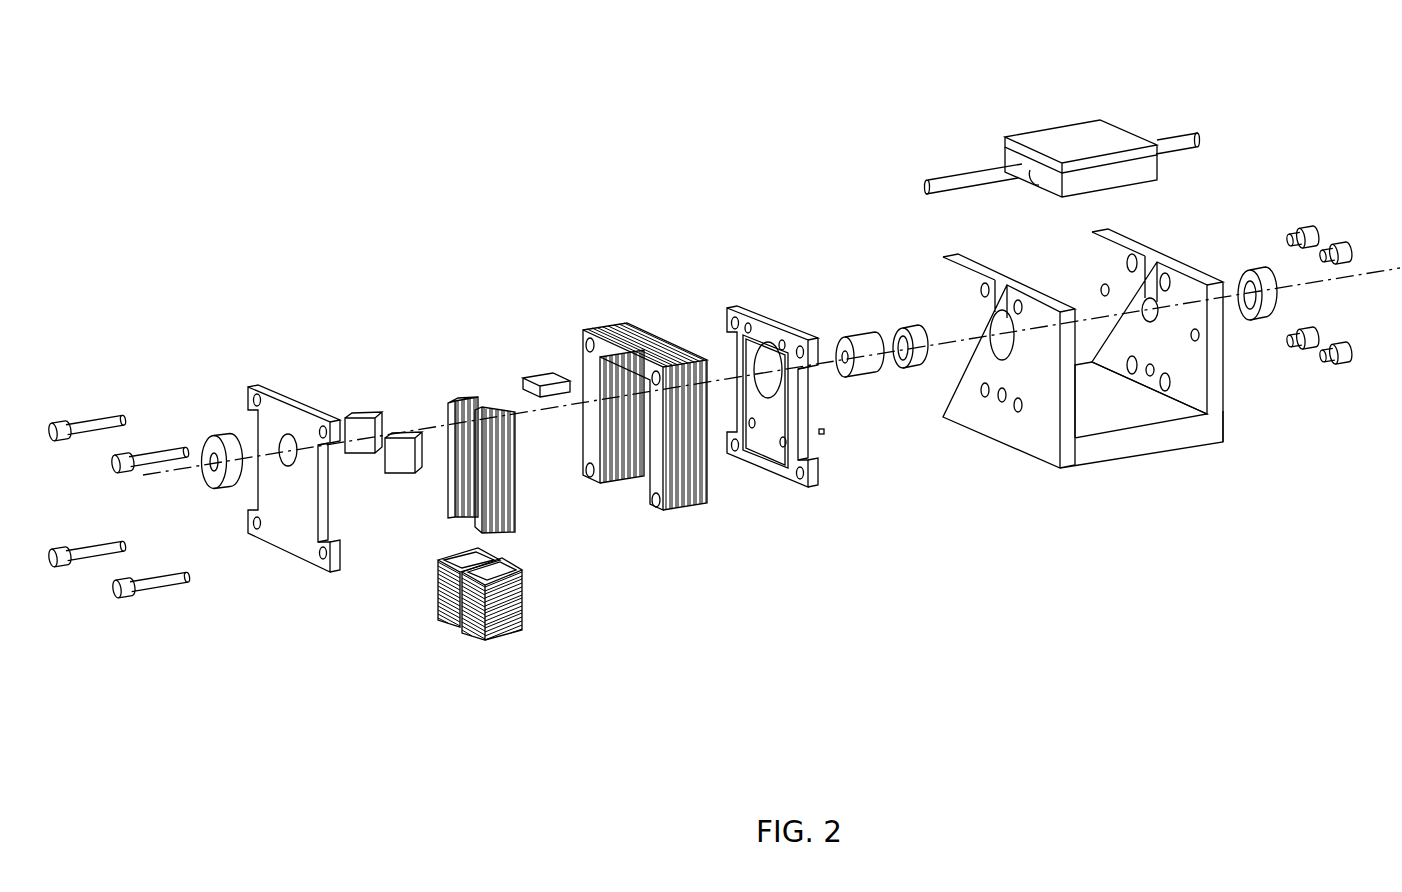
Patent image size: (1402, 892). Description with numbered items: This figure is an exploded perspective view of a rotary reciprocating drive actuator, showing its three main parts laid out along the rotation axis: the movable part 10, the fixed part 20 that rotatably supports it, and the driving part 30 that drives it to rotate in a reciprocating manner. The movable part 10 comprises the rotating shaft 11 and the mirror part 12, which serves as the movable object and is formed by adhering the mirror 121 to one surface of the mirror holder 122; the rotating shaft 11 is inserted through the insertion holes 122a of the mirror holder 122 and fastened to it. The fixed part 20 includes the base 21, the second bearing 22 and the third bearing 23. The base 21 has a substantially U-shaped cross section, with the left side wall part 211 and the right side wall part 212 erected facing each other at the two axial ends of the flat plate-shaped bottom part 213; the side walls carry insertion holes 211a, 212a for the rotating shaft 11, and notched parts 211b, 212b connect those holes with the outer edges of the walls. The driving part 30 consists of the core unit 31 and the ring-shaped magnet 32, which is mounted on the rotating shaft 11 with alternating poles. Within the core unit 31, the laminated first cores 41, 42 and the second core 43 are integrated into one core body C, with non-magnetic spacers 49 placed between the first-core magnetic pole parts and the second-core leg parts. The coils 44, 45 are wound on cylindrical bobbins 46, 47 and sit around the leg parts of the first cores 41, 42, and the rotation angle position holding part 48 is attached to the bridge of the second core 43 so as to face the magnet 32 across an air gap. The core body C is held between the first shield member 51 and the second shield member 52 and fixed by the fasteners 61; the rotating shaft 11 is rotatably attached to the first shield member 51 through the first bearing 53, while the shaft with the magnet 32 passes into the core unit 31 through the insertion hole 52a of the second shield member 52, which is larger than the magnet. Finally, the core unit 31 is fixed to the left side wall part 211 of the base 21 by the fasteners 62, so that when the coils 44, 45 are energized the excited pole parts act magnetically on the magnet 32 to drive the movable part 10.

The movable part 10 is at (1062, 128).
The rotating shaft 11 is at (960, 182).
The mirror part 12 is at (1080, 132).
The mirror 121 is at (1038, 133).
The mirror holder 122 is at (1081, 152).
The insertion hole 122a is at (1028, 181).
The fixed part 20 is at (1089, 364).
The base 21 is at (1114, 351).
The left side wall part 211 is at (1009, 348).
The insertion hole 211a is at (997, 360).
The notched part 211b is at (1017, 276).
The right side wall part 212 is at (1181, 331).
The insertion hole 212a is at (1163, 322).
The notched part 212b is at (1160, 257).
The bottom part 213 is at (1093, 462).
The second bearing 22 is at (915, 368).
The third bearing 23 is at (1257, 320).
The driving part 30 is at (543, 432).
The core unit 31 is at (539, 432).
The magnet 32 is at (855, 366).
The first core 41 is at (474, 399).
The first core 42 is at (512, 407).
The second core 43 is at (645, 394).
The coil 44 is at (437, 603).
The coil 45 is at (523, 602).
The bobbin 46 is at (446, 624).
The bobbin 47 is at (494, 640).
The rotation angle position holding part 48 is at (545, 397).
The spacer 49 is at (365, 412).
The first shield member 51 is at (298, 392).
The second shield member 52 is at (802, 380).
The insertion hole 52a is at (780, 386).
The first bearing 53 is at (220, 436).
The fastener 61 is at (147, 425).
The fastener 62 is at (1318, 243).
The core body C is at (577, 383).